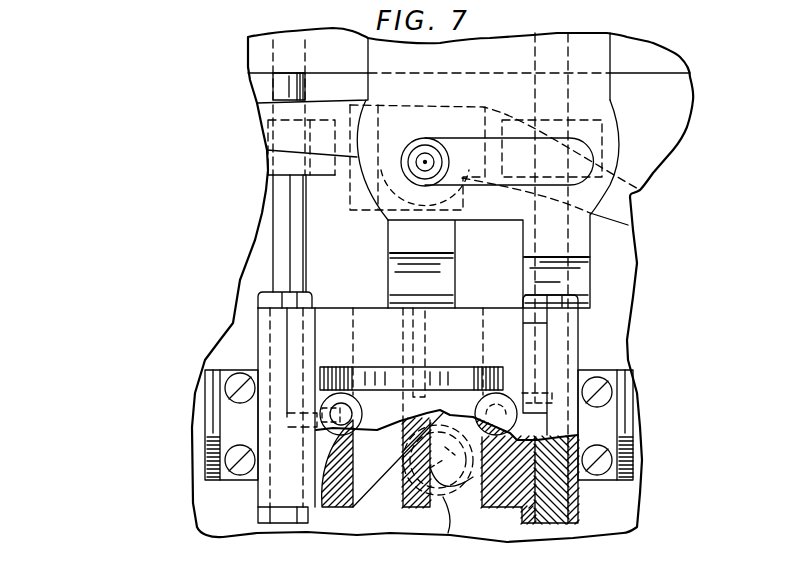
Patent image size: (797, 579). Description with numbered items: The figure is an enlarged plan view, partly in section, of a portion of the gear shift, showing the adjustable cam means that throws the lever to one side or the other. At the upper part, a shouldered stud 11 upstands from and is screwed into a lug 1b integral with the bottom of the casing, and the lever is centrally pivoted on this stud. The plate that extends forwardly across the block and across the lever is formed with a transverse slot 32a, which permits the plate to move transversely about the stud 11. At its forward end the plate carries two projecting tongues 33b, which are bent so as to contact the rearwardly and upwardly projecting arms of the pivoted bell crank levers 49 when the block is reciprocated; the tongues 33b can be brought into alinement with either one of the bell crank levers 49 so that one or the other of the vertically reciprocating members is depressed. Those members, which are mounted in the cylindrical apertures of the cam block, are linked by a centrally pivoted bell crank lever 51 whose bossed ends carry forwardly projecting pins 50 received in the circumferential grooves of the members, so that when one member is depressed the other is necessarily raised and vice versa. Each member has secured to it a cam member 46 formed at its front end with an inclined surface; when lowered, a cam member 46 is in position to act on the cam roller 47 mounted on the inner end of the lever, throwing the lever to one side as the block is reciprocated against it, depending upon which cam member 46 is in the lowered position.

The lug 1b is at (363, 204).
The shouldered stud 11 is at (412, 146).
The transverse slot 32a is at (488, 147).
The projecting tongues 33b is at (452, 271).
The bell crank levers 49 is at (293, 335).
The bell crank lever 51 is at (355, 372).
The pins 50 is at (350, 399).
The cam member 46 is at (357, 487).
The cam roller 47 is at (442, 497).